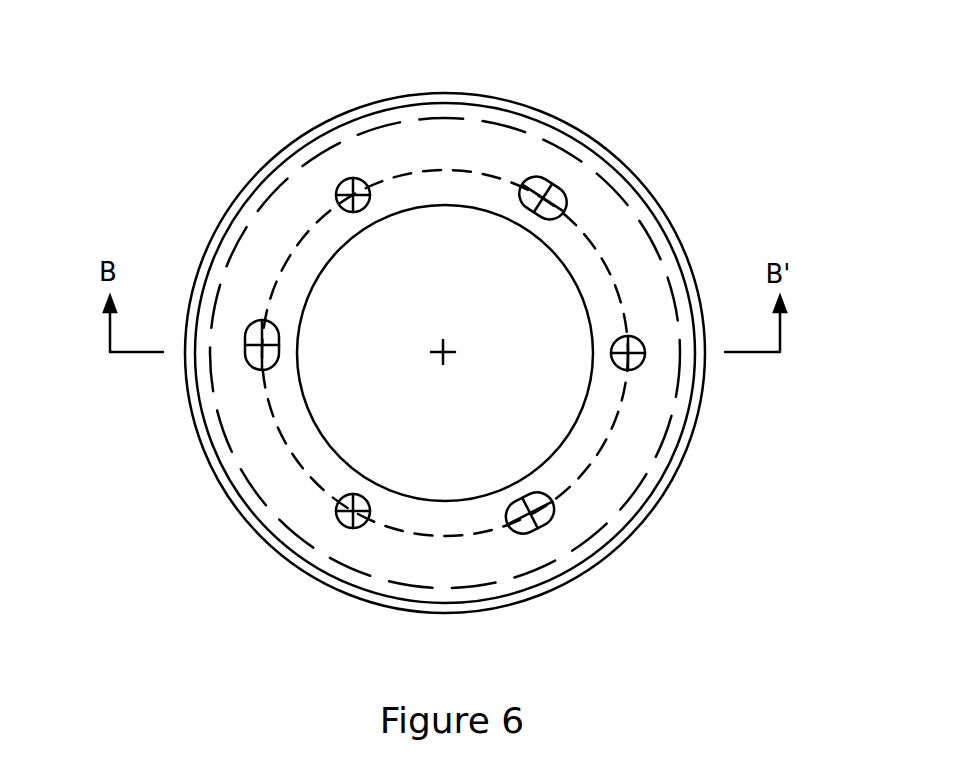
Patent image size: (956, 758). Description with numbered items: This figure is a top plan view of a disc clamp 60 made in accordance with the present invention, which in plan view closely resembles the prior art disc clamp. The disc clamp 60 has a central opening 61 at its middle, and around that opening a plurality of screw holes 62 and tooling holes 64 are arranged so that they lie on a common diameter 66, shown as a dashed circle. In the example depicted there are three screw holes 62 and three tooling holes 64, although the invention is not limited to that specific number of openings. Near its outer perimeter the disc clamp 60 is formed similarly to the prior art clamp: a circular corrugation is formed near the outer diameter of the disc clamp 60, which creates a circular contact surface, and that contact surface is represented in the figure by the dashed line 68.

The disc clamp 60 is at (688, 153).
The central opening 61 is at (443, 204).
The screw holes 62 is at (342, 182).
The tooling holes 64 is at (543, 183).
The common diameter 66 is at (605, 443).
The dashed line 68 is at (232, 243).